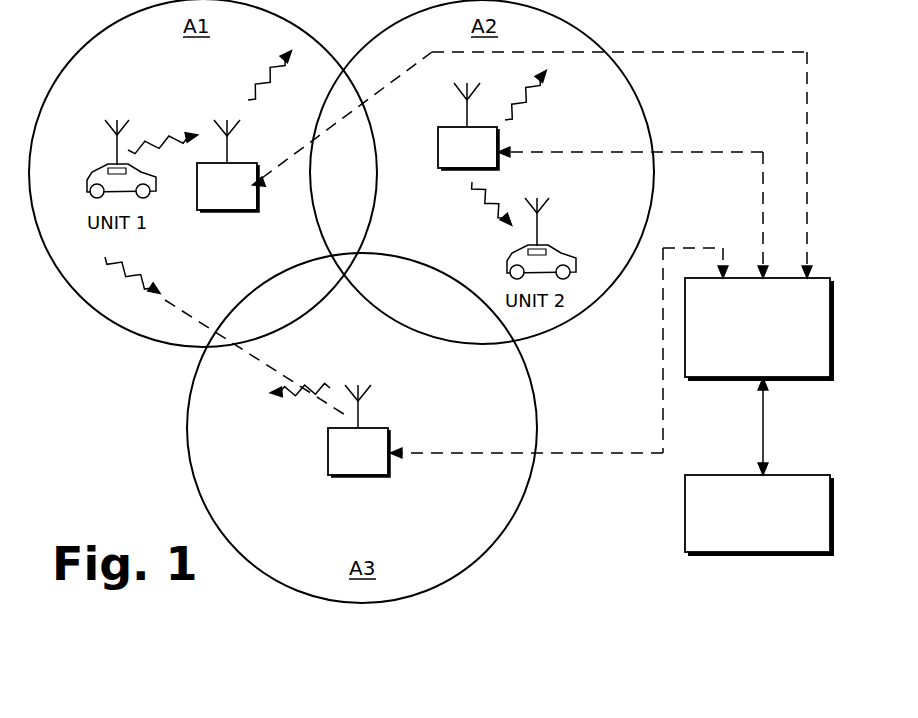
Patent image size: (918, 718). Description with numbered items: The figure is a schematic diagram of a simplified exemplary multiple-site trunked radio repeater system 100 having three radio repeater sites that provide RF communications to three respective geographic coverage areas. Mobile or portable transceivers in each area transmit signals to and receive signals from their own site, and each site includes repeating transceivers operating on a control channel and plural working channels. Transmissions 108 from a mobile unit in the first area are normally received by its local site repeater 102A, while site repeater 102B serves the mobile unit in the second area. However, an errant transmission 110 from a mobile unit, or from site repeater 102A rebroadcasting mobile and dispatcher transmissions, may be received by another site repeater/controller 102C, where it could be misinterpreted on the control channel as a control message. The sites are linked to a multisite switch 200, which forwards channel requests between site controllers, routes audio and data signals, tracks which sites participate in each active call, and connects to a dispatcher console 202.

The trunked radio repeater system 100 is at (618, 395).
The site repeater 102A is at (214, 211).
The site repeater 102B is at (438, 142).
The site repeater/controller 102C is at (390, 438).
The transmissions 108 is at (160, 136).
The transmission 110 is at (123, 283).
The multisite switch 200 is at (758, 376).
The dispatcher console 202 is at (685, 502).